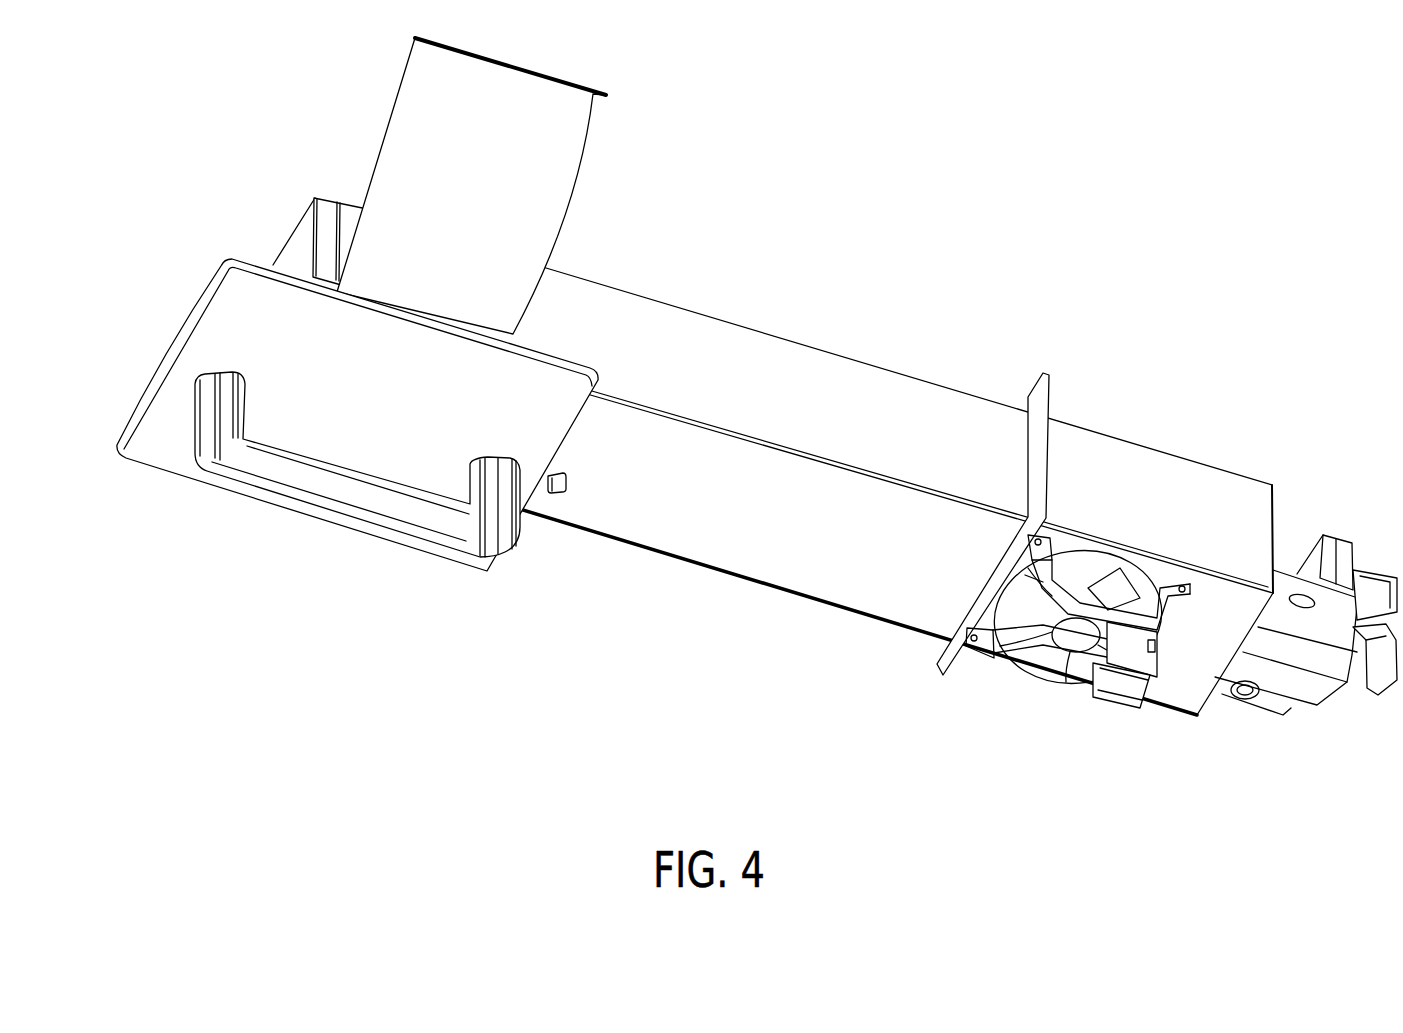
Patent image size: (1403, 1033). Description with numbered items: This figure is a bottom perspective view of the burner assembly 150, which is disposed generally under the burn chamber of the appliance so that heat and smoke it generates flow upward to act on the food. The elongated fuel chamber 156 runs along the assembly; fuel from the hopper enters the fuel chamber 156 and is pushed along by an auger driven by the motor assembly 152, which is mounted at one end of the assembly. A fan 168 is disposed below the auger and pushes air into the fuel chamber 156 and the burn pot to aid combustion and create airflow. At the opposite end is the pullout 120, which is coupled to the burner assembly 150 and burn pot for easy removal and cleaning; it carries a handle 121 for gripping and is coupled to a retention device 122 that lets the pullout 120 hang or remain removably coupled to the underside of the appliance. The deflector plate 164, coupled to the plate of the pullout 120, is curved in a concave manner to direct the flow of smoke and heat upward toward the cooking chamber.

The pullout 120 is at (350, 415).
The handle 121 is at (343, 514).
The retention device 122 is at (160, 468).
The burner assembly 150 is at (773, 434).
The motor assembly 152 is at (1343, 527).
The fuel chamber 156 is at (785, 411).
The deflector plate 164 is at (400, 140).
The fan 168 is at (1060, 670).